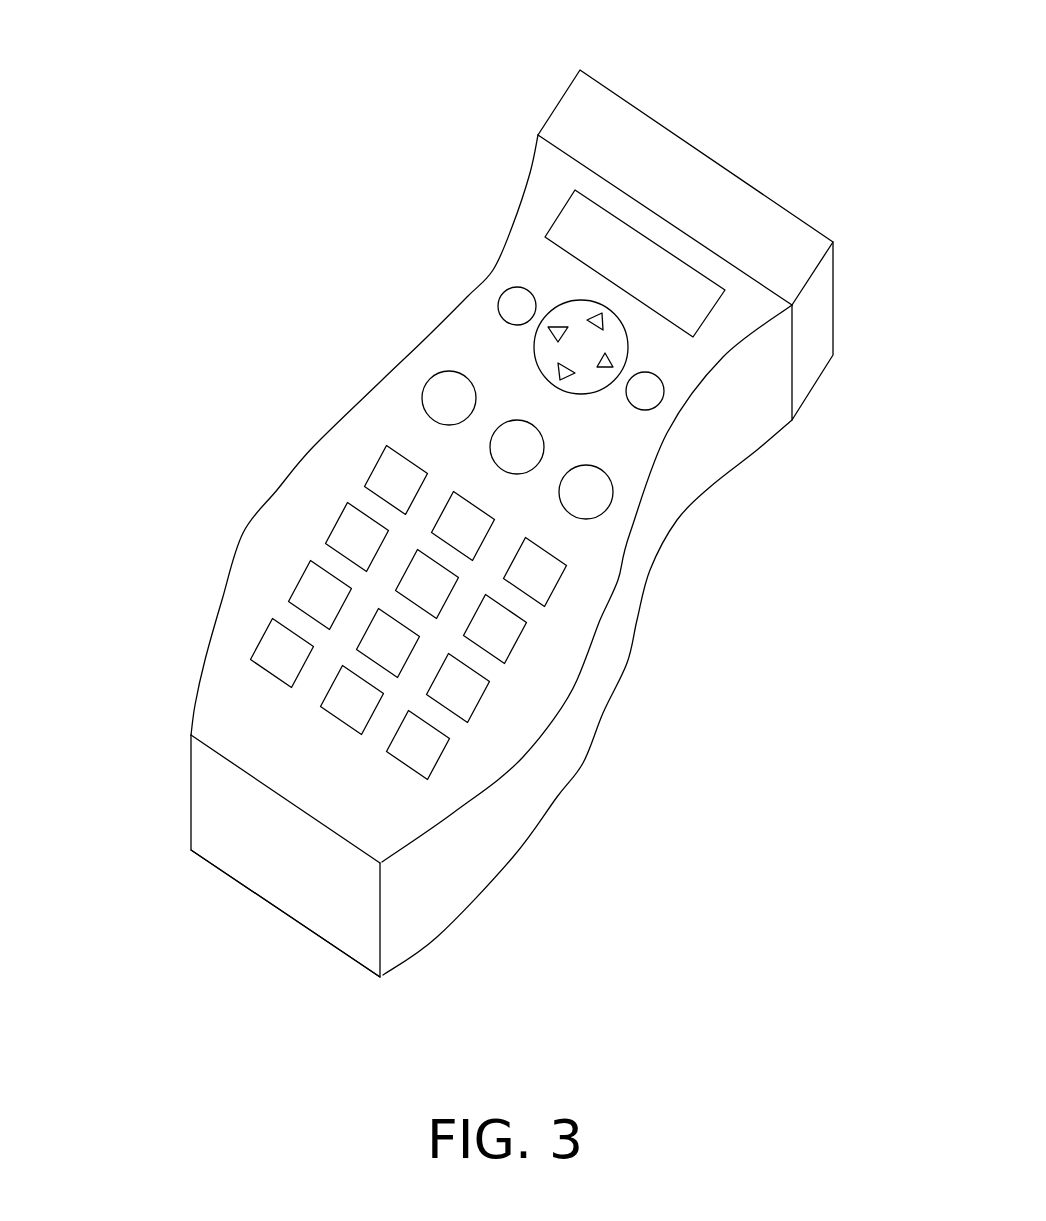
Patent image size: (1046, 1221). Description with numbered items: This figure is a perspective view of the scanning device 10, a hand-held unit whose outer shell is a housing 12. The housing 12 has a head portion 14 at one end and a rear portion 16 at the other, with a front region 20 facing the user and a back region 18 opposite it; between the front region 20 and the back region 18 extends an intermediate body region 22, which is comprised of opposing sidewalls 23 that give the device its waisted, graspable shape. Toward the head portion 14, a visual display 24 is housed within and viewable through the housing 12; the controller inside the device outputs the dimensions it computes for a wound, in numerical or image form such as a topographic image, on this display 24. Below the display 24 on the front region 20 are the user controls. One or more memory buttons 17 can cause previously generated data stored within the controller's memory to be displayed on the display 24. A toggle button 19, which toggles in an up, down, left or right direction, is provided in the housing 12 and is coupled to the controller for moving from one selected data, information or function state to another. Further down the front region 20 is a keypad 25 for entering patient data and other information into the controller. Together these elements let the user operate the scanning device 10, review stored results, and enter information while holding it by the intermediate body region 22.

The scanning device 10 is at (278, 293).
The housing 12 is at (670, 552).
The head portion 14 is at (568, 118).
The rear portion 16 is at (256, 860).
The memory buttons 17 is at (517, 297).
The back region 18 is at (338, 950).
The toggle button 19 is at (613, 343).
The front region 20 is at (272, 562).
The intermediate body region 22 is at (643, 608).
The opposing sidewalls 23 is at (280, 480).
The visual display 24 is at (605, 237).
The keypad 25 is at (430, 753).